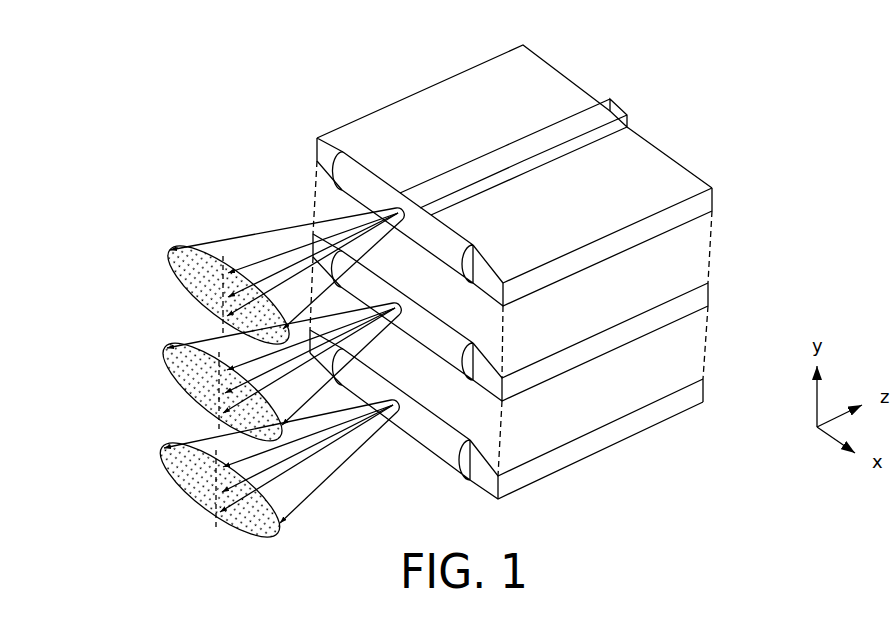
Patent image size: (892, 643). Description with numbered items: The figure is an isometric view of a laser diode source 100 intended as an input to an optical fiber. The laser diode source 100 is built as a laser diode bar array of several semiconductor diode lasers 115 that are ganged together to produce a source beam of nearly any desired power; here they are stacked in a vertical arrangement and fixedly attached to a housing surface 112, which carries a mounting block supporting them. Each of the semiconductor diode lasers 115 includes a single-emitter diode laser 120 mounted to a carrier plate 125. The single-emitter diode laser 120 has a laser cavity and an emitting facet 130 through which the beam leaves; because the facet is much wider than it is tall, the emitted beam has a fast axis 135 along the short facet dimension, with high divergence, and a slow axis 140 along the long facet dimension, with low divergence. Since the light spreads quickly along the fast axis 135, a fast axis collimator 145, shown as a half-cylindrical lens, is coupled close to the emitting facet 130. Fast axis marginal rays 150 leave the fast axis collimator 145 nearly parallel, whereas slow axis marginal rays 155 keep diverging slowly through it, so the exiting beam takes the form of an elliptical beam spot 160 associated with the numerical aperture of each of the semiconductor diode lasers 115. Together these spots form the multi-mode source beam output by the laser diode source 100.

The laser diode source 100 is at (176, 104).
The housing surface 112 is at (687, 488).
The semiconductor diode lasers 115 is at (534, 296).
The single-emitter diode laser 120 is at (627, 114).
The carrier plate 125 is at (595, 204).
The emitting facet 130 is at (412, 189).
The fast axis 135 is at (225, 248).
The slow axis 140 is at (155, 242).
The fast axis collimator 145 is at (348, 164).
The fast axis marginal rays 150 is at (292, 249).
The slow axis marginal rays 155 is at (207, 242).
The elliptical beam spot 160 is at (191, 414).